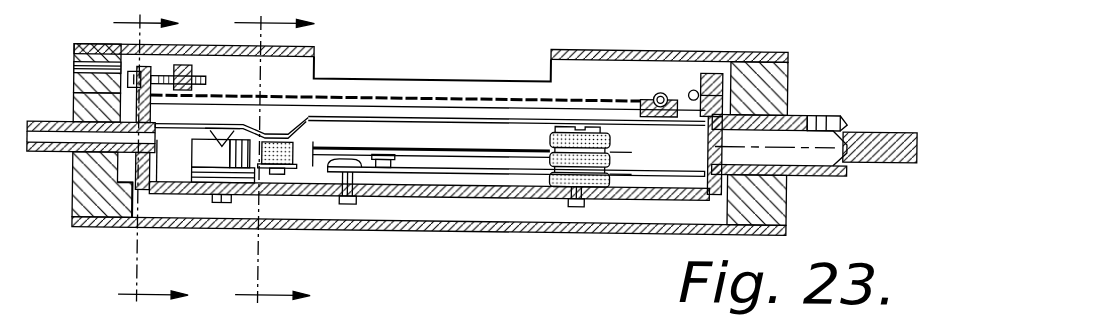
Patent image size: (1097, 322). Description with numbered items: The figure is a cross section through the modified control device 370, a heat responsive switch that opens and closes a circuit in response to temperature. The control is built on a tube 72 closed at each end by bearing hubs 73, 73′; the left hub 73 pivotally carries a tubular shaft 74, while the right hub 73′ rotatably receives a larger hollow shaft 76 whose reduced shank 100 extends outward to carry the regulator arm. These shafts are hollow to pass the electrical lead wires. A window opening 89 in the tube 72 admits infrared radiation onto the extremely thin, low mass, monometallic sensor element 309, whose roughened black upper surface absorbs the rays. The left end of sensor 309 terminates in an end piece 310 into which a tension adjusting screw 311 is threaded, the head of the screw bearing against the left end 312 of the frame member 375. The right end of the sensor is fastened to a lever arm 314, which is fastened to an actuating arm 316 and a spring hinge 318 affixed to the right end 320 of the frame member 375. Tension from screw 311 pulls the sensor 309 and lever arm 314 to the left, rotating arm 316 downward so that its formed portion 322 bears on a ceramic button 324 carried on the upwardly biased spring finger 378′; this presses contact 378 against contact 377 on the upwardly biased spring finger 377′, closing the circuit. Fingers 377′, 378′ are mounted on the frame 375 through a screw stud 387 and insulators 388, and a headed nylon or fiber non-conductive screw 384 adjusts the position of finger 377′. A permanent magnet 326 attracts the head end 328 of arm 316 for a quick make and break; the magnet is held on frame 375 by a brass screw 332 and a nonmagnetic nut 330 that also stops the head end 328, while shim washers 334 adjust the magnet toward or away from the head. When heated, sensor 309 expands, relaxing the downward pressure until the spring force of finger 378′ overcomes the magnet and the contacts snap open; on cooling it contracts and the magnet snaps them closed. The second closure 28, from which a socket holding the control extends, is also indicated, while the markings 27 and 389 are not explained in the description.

The section line 27- 27 is at (128, 168).
The second closure 28 is at (289, 168).
The tube 72 is at (433, 231).
The bearing hub 73 is at (73, 210).
The bearing hub 73′ is at (803, 62).
The tubular shaft 74 is at (53, 163).
The hollow shaft 76 is at (808, 173).
The window opening 89 is at (528, 80).
The reduced shank 100 is at (867, 160).
The heat responsive sensor element 309 is at (470, 80).
The end piece 310 is at (228, 47).
The tension adjusting screw 311 is at (73, 75).
The left end of frame member 312 is at (72, 112).
The lever arm 314 is at (634, 100).
The actuating arm 316 is at (408, 118).
The spring hinge 318 is at (682, 100).
The right end of frame member 320 is at (722, 60).
The formed portion 322 is at (332, 106).
The ceramic button 324 is at (305, 173).
The permanent magnet 326 is at (120, 232).
The head end 328 is at (250, 113).
The nut 330 is at (222, 134).
The brass screw 332 is at (213, 203).
The shim washers 334 is at (154, 223).
The control device 370 is at (812, 80).
The frame member 375 is at (450, 197).
The contact 377 is at (376, 173).
The spring finger 377′ is at (500, 173).
The contact 378 is at (382, 97).
The spring finger 378′ is at (470, 148).
The non-conductive screw 384 is at (350, 190).
The screw stud 387 is at (578, 205).
The insulators 388 is at (612, 158).
The element 389 is at (600, 319).